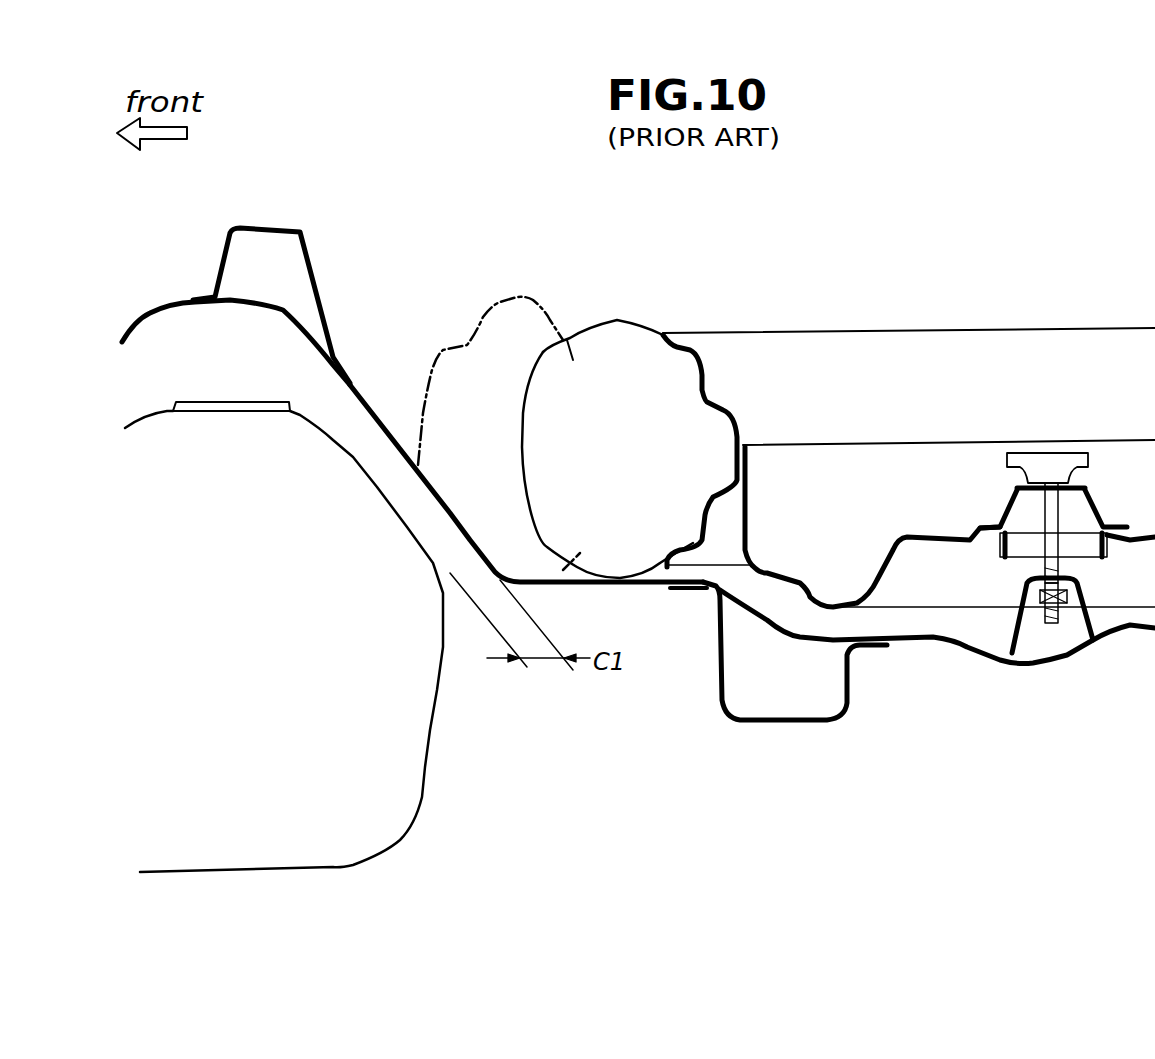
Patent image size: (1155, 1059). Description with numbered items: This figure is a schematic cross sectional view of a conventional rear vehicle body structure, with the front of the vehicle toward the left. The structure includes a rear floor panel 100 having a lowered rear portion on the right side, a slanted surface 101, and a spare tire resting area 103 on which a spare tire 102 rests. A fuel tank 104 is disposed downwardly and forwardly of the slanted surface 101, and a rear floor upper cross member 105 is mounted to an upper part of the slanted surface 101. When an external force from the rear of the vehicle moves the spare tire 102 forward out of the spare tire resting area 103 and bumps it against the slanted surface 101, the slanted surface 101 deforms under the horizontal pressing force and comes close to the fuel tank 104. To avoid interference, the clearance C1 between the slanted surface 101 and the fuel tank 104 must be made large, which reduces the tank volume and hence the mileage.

The rear floor panel 100 is at (150, 305).
The slanted surface 101 is at (367, 410).
The spare tire 102 is at (787, 330).
The spare tire resting area 103 is at (711, 580).
The fuel tank 104 is at (423, 782).
The rear floor upper cross member 105 is at (280, 228).